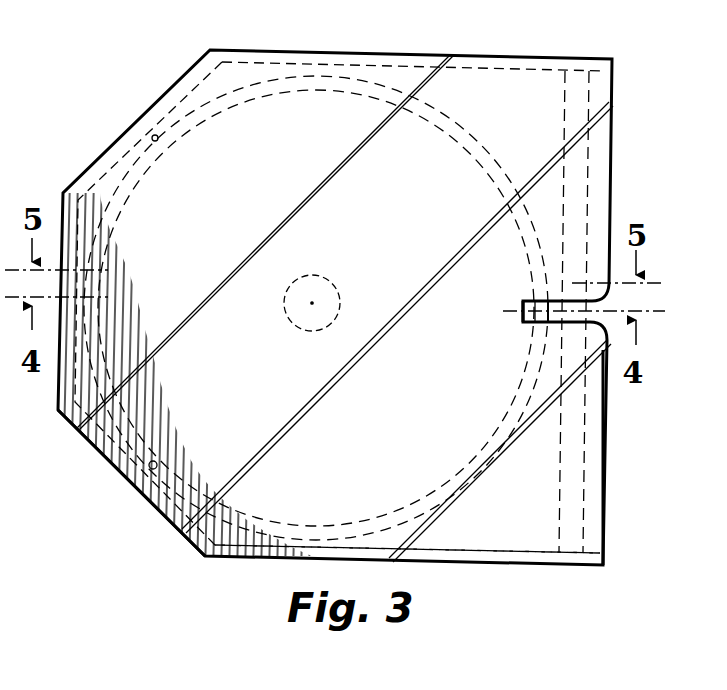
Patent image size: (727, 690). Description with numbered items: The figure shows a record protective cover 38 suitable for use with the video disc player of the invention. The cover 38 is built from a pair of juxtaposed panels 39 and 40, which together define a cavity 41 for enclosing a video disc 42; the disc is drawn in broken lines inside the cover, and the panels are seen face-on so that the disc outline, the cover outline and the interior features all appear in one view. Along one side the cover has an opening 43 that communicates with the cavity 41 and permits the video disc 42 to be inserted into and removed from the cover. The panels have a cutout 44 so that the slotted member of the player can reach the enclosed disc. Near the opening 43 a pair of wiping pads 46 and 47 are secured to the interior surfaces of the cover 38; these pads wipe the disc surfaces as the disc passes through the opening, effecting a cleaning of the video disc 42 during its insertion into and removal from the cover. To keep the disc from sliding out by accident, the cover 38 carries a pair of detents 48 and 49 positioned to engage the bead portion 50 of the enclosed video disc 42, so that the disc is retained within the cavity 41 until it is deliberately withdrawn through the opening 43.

The record protective cover 38 is at (101, 135).
The panel 39 is at (496, 77).
The panel 40 is at (530, 538).
The cavity 41 is at (158, 514).
The video disc 42 is at (394, 82).
The opening 43 is at (605, 497).
The cutout 44 is at (550, 303).
The wiping pad 46 is at (580, 108).
The wiping pad 47 is at (573, 458).
The detent 48 is at (158, 140).
The detent 49 is at (157, 462).
The bead portion 50 is at (178, 113).